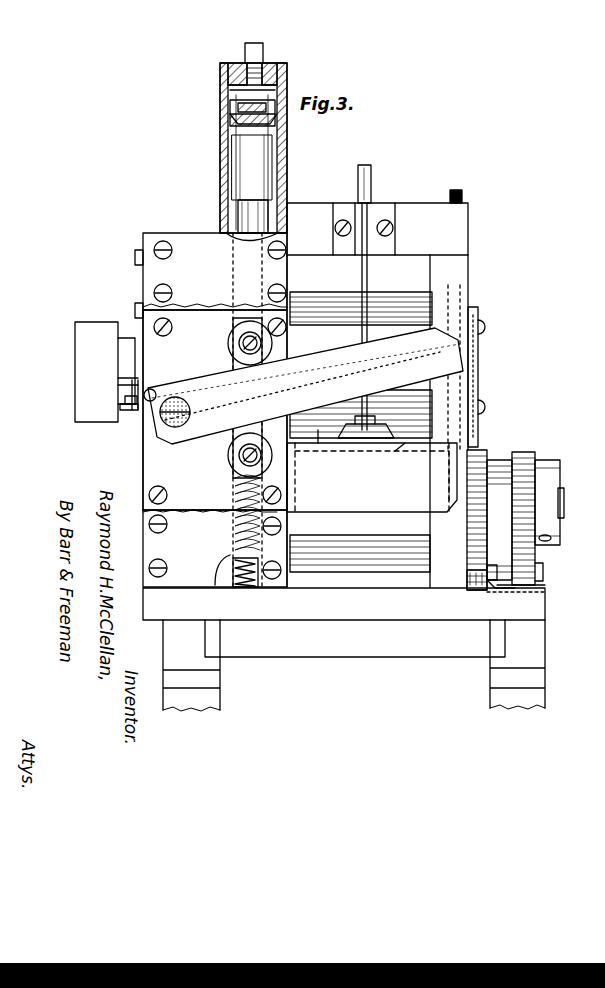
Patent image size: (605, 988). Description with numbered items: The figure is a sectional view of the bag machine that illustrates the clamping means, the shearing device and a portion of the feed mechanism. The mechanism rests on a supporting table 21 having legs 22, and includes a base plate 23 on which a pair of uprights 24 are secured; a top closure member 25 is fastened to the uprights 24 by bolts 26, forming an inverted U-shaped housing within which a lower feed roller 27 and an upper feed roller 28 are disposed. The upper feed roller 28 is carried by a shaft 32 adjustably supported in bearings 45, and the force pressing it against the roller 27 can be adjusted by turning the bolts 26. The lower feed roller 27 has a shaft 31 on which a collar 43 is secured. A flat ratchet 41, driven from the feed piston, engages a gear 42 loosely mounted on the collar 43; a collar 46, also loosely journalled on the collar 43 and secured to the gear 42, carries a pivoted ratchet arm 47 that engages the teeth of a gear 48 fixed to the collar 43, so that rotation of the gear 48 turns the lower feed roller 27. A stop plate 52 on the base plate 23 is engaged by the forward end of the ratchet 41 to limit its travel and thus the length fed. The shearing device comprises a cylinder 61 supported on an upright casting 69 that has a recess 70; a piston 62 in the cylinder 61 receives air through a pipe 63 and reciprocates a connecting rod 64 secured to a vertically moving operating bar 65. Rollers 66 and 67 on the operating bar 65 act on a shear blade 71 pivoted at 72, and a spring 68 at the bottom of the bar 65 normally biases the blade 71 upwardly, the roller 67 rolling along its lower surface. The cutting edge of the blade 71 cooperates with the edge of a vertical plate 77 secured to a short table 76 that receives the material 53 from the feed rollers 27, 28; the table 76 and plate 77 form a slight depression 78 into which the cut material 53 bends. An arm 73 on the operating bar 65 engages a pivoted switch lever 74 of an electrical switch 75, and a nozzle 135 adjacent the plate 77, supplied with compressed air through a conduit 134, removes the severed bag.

The supporting table 21 is at (350, 648).
The legs 22 is at (214, 700).
The base plate 23 is at (546, 604).
The uprights 24 is at (445, 575).
The top closure member 25 is at (470, 231).
The bolts 26 is at (463, 192).
The lower feed roller 27 is at (360, 550).
The upper feed roller 28 is at (318, 300).
The shaft 31 is at (565, 506).
The shaft 32 is at (480, 345).
The flat ratchet 41 is at (476, 585).
The gear 42 is at (480, 455).
The collar 43 is at (553, 540).
The bearings 45 is at (480, 299).
The collar 46 is at (500, 463).
The ratchet arm 47 is at (525, 582).
The gear 48 is at (526, 460).
The stop plate 52 is at (490, 585).
The material 53 is at (318, 445).
The cylinder 61 is at (221, 141).
The piston 62 is at (230, 119).
The pipe 63 is at (244, 48).
The connecting rod 64 is at (246, 223).
The operating bar 65 is at (238, 318).
The roller 66 is at (229, 345).
The roller 67 is at (228, 457).
The spring 68 is at (236, 565).
The upright casting 69 is at (143, 458).
The recess 70 is at (178, 512).
The shear blade 71 is at (325, 380).
The pivot 72 is at (191, 412).
The arm 73 is at (153, 390).
The switch lever 74 is at (135, 412).
The electrical switch 75 is at (78, 386).
The table 76 is at (394, 452).
The vertical plate 77 is at (358, 496).
The depression 78 is at (372, 445).
The conduit 134 is at (372, 172).
The nozzle 135 is at (361, 414).